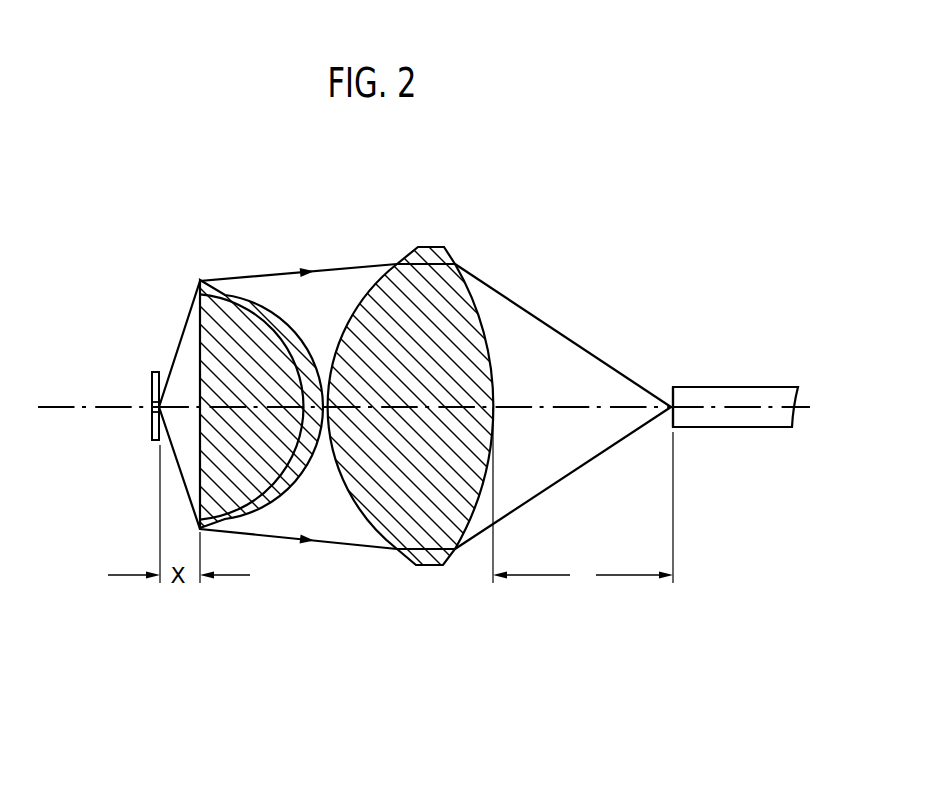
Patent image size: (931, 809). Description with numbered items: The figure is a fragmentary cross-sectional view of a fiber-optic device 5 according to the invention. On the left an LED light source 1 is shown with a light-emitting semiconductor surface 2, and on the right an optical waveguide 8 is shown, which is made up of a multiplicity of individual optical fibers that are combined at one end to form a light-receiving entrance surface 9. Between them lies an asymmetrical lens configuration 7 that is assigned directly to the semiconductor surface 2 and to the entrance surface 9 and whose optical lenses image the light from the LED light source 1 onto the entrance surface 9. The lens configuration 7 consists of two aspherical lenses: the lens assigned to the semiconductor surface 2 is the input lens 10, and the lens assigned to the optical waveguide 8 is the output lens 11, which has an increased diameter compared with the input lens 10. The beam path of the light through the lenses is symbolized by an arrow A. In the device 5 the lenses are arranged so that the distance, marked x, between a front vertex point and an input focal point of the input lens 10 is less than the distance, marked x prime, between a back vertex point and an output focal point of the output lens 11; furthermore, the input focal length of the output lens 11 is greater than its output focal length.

The LED light source 1 is at (140, 387).
The light-emitting semiconductor surface 2 is at (150, 409).
The fiber-optic device 5 is at (658, 610).
The lens configuration 7 is at (463, 427).
The optical waveguide 8 is at (739, 417).
The entrance surface 9 is at (673, 387).
The input lens 10 is at (210, 289).
The output lens 11 is at (432, 247).
The arrow A is at (342, 269).